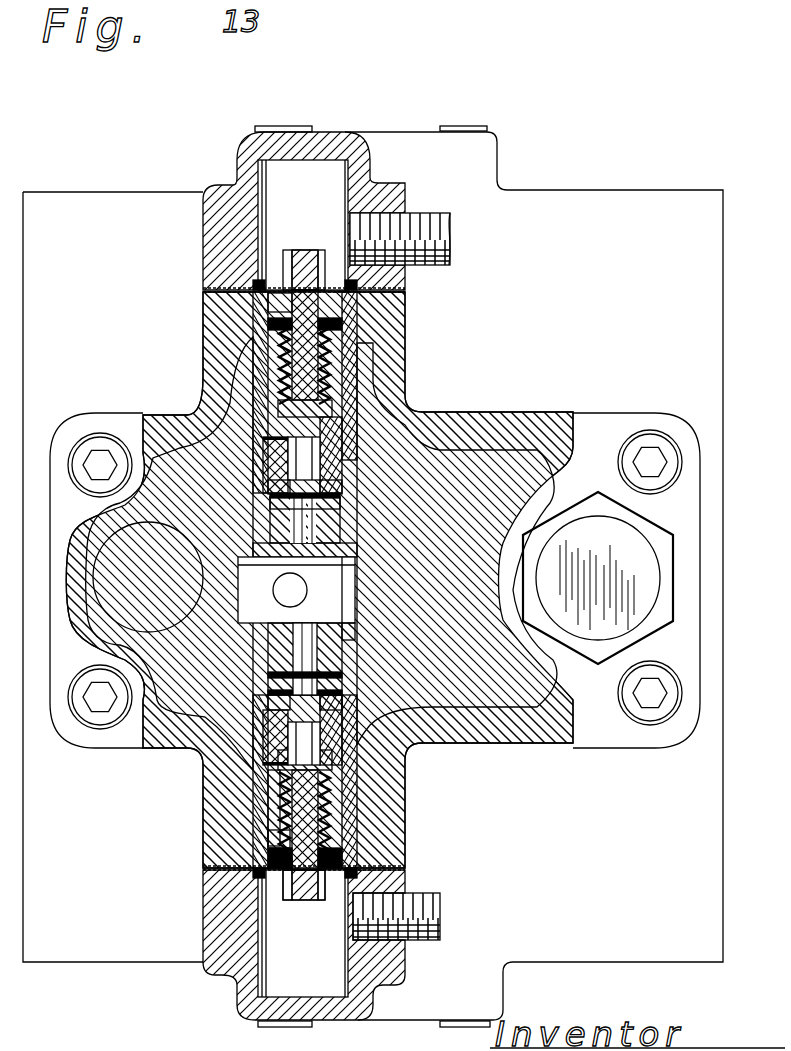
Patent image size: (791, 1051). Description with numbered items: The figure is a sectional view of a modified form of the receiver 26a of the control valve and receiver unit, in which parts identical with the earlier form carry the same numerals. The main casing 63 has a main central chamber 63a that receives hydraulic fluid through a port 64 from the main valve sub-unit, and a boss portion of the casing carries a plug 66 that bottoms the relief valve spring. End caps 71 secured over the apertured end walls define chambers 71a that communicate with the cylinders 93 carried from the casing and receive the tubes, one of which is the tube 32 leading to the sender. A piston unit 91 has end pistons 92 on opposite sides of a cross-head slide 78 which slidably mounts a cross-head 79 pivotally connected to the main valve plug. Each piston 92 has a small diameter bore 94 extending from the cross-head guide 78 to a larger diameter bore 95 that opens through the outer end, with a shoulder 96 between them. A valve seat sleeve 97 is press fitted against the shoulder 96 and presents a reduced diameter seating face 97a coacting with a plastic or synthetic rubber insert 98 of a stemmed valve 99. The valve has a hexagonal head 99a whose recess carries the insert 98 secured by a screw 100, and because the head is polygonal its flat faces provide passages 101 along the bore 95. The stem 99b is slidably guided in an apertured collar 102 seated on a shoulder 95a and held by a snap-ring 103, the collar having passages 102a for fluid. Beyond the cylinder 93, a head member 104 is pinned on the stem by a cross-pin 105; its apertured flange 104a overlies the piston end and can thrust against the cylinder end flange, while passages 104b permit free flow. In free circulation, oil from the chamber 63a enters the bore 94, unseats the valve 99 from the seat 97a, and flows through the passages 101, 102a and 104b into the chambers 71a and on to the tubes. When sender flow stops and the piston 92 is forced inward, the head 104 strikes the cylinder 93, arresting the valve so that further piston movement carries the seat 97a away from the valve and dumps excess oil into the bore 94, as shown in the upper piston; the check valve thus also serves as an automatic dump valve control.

The receiver 26a is at (377, 182).
The tube 32 is at (428, 240).
The main casing 63 is at (481, 421).
The main central chamber 63a is at (203, 470).
The port 64 is at (178, 634).
The plug 66 is at (587, 546).
The end cap 71 is at (230, 968).
The chamber 71a is at (272, 975).
The cross-head slide 78 is at (270, 636).
The cross-head 79 is at (246, 612).
The piston unit 91 is at (270, 527).
The end piston 92 is at (350, 497).
The cylinder 93 is at (352, 392).
The small diameter bore 94 is at (318, 661).
The larger diameter bore 95 is at (334, 450).
The shoulder 95a is at (282, 840).
The shoulder 96 is at (277, 494).
The valve seat sleeve 97 is at (270, 460).
The seating face 97a is at (283, 440).
The insert 98 is at (333, 408).
The stemmed valve 99 is at (330, 840).
The hexagonal head 99a is at (282, 788).
The stem 99b is at (266, 868).
The screw 100 is at (304, 601).
The passages 101 is at (345, 412).
The apertured collar 102 is at (330, 328).
The passages 102a is at (350, 866).
The snap-ring 103 is at (300, 866).
The head member 104 is at (321, 282).
The apertured flange 104a is at (290, 880).
The passages 104b is at (290, 895).
The cross-pin 105 is at (307, 272).